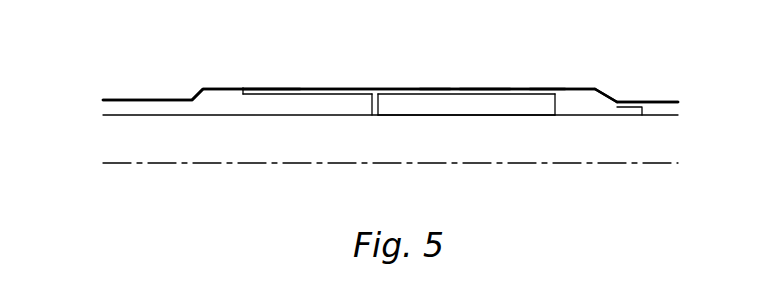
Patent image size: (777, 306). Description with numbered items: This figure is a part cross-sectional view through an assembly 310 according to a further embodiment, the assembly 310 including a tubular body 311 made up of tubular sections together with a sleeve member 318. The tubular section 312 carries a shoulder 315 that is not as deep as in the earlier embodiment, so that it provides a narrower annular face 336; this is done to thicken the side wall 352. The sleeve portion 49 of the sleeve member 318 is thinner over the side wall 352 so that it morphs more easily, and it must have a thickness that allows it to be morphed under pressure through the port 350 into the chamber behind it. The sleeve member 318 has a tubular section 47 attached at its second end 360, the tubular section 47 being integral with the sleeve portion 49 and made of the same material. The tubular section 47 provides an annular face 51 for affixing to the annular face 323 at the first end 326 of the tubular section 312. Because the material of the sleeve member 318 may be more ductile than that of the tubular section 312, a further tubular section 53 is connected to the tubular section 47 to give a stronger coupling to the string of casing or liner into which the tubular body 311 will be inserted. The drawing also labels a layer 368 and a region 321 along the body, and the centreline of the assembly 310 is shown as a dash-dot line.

The assembly 310 is at (600, 52).
The tubular body 311 is at (120, 142).
The tubular section 312 is at (207, 100).
The annular face 336 is at (238, 89).
The shoulder 315 is at (245, 90).
The top layer 368 is at (247, 91).
The intermediate layer 321 is at (323, 94).
The port 350 is at (371, 103).
The side wall 352 is at (442, 110).
The first end 326 is at (503, 113).
The sleeve portion 49 is at (435, 89).
The sleeve member 318 is at (480, 89).
The second end 360 is at (545, 89).
The annular face 323 is at (555, 97).
The tubular section 47 is at (583, 96).
The further tubular section 53 is at (660, 107).
The annular face 51 is at (558, 96).